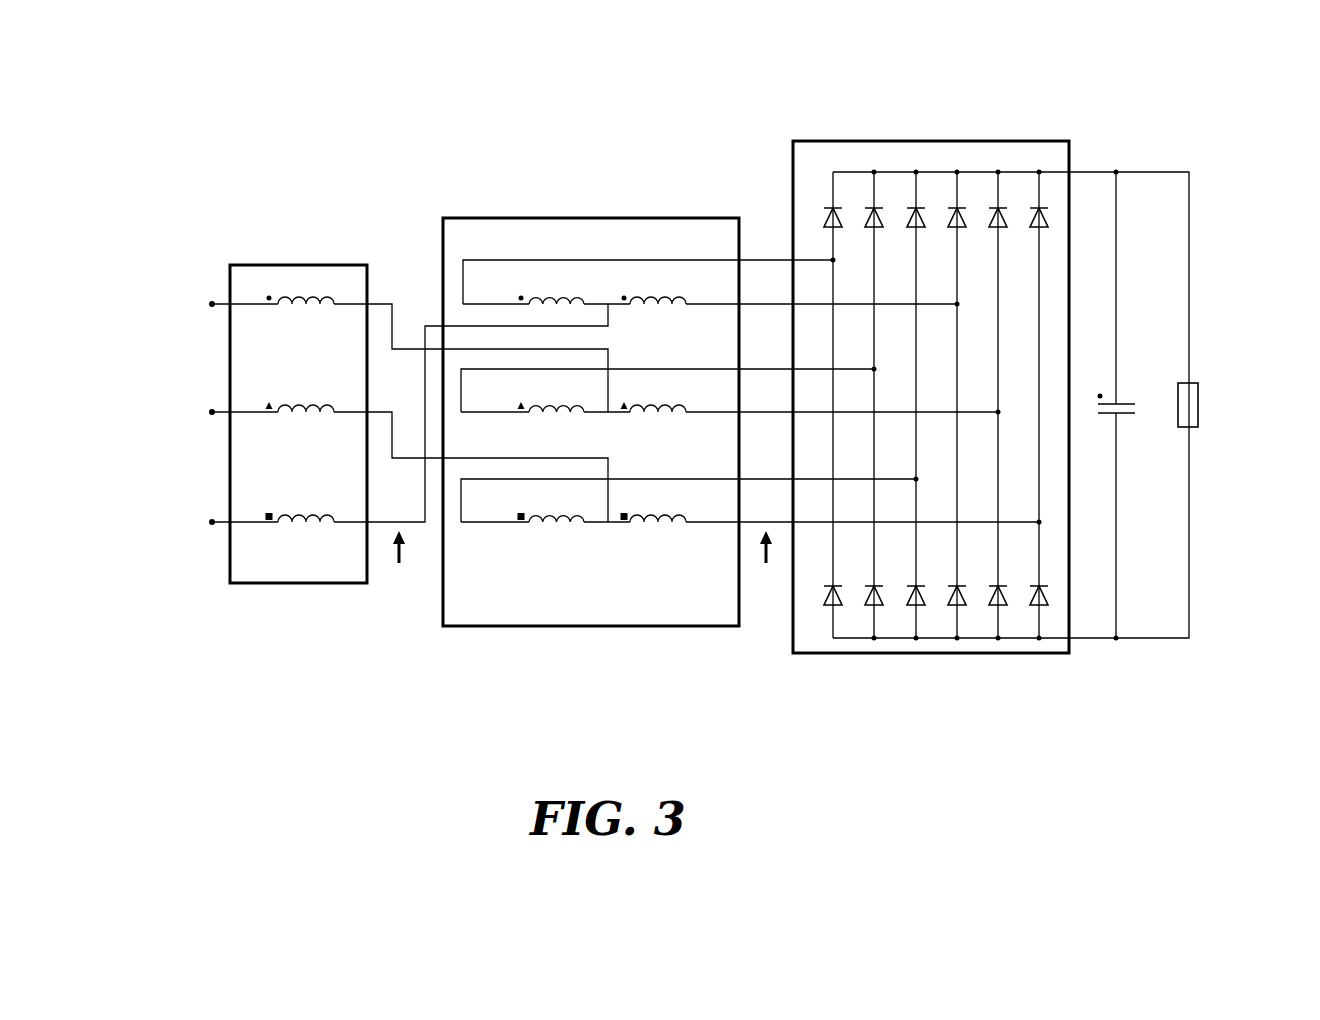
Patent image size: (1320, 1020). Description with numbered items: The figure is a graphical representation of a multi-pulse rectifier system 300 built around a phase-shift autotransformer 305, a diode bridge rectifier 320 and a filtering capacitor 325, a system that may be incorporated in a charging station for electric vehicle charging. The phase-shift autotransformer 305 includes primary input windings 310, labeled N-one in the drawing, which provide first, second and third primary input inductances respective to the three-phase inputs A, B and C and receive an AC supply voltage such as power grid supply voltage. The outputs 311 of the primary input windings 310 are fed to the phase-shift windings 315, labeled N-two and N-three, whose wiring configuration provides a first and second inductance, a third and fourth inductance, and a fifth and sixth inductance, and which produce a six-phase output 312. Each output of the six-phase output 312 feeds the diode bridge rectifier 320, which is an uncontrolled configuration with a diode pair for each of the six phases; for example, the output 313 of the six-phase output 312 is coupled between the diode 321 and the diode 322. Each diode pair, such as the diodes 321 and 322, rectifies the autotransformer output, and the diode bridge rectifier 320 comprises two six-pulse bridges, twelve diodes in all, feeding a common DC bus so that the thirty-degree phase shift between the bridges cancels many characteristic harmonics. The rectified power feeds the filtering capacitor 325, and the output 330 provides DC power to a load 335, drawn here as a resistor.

The multi-pulse rectifier system 300 is at (200, 121).
The phase-shift autotransformer 305 is at (162, 366).
The primary input windings 310 is at (305, 265).
The outputs of the primary input windings 311 is at (398, 567).
The 6-phase output 312 is at (766, 567).
The output of the 6-phase output 313 is at (787, 262).
The phase-shift windings 315 is at (578, 224).
The diode bridge rectifier 320 is at (1002, 140).
The diode 321 is at (832, 205).
The diode 322 is at (833, 620).
The filtering capacitor 325 is at (1127, 395).
The output 330 is at (1133, 173).
The load 335 is at (1198, 385).